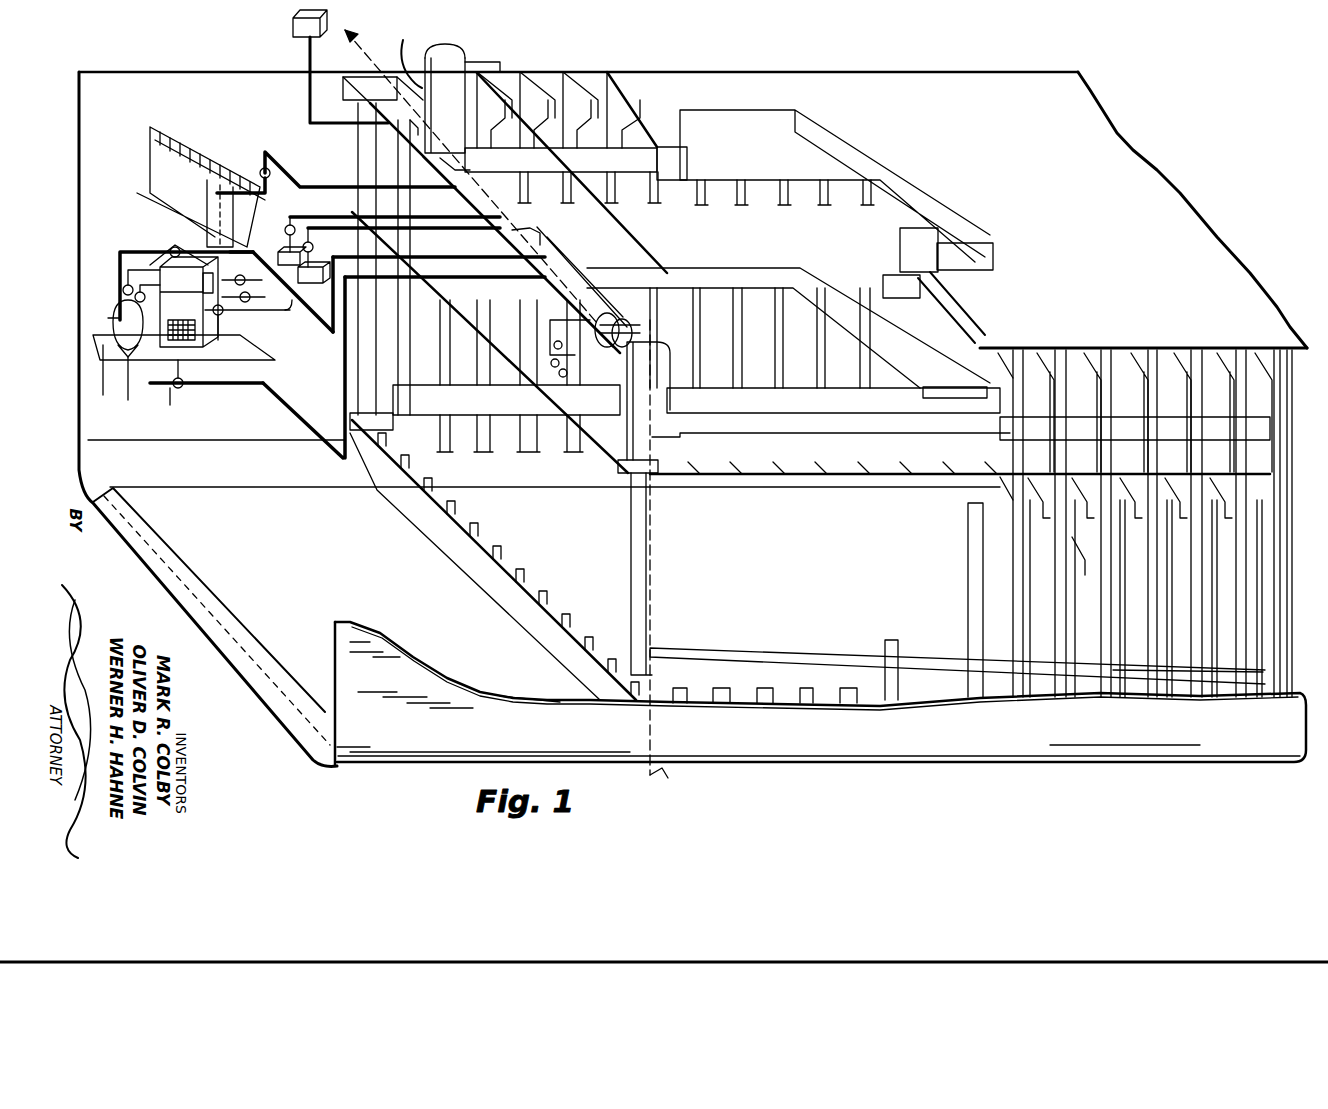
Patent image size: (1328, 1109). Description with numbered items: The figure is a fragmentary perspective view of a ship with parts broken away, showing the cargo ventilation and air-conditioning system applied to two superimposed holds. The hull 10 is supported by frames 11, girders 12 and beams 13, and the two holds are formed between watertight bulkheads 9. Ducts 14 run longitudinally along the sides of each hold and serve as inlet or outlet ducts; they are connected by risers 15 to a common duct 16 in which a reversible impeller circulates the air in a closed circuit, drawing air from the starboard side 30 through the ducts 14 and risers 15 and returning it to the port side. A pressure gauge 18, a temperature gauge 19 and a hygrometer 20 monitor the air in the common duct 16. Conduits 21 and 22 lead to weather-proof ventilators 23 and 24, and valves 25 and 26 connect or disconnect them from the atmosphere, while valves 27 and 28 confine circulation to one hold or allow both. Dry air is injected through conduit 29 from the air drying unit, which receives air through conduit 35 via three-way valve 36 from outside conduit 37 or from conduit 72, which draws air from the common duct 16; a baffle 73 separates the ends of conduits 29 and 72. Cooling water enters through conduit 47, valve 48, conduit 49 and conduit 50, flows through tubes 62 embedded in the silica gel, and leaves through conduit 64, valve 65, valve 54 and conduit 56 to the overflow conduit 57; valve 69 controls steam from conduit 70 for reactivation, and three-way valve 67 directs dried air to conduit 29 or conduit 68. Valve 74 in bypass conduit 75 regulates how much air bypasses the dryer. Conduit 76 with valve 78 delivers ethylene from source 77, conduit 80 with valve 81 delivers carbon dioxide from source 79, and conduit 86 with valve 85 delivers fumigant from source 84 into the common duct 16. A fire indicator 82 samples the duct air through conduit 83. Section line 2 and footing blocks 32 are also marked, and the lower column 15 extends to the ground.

The section line 2- 2 is at (506, 407).
The watertight bulkhead 9 is at (500, 582).
The hull 10 is at (115, 76).
The frame 11 is at (738, 187).
The girder 12 is at (687, 165).
The beam 13 is at (577, 100).
The duct 14 is at (553, 160).
The riser 15 is at (395, 157).
The common duct 16 is at (542, 230).
The pressure gauge 18 is at (553, 346).
The temperature gauge 19 is at (551, 363).
The hygrometer 20 is at (566, 378).
The conduit 21 is at (408, 46).
The conduit 22 is at (458, 106).
The weather-proof ventilator 23 is at (440, 46).
The weather-proof ventilator 24 is at (467, 68).
The valve 25 is at (416, 135).
The valve 26 is at (438, 160).
The valve 27 is at (645, 338).
The valve 28 is at (622, 350).
The conduit 29 is at (500, 230).
The starboard side 30 is at (540, 693).
The footing blocks 32 is at (754, 708).
The conduit 35 is at (182, 370).
The three-way valve 36 is at (183, 386).
The conduit 37 is at (173, 405).
The conduit 47 is at (251, 296).
The valve 48 is at (245, 270).
The conduit 49 is at (248, 252).
The conduit 50 is at (200, 298).
The valve 54 is at (125, 300).
The conduit 56 is at (128, 328).
The conduit 57 is at (126, 365).
The tube 62 is at (210, 268).
The conduit 64 is at (118, 318).
The valve 65 is at (123, 290).
The three-way valve 67 is at (171, 250).
The conduit 68 is at (125, 245).
The valve 69 is at (233, 311).
The conduit 70 is at (287, 311).
The conduit 72 is at (293, 416).
The baffle 73 is at (572, 262).
The valve 74 is at (218, 340).
The conduit 75 is at (320, 316).
The conduit 76 is at (425, 257).
The source of ethylene 77 is at (314, 277).
The valve 78 is at (314, 246).
The source of carbon dioxide 79 is at (150, 148).
The conduit 80 is at (295, 173).
The valve 81 is at (262, 169).
The fire indicator 82 is at (293, 27).
The conduit 83 is at (308, 85).
The source of fumigant 84 is at (284, 245).
The valve 85 is at (286, 226).
The conduit 86 is at (305, 217).